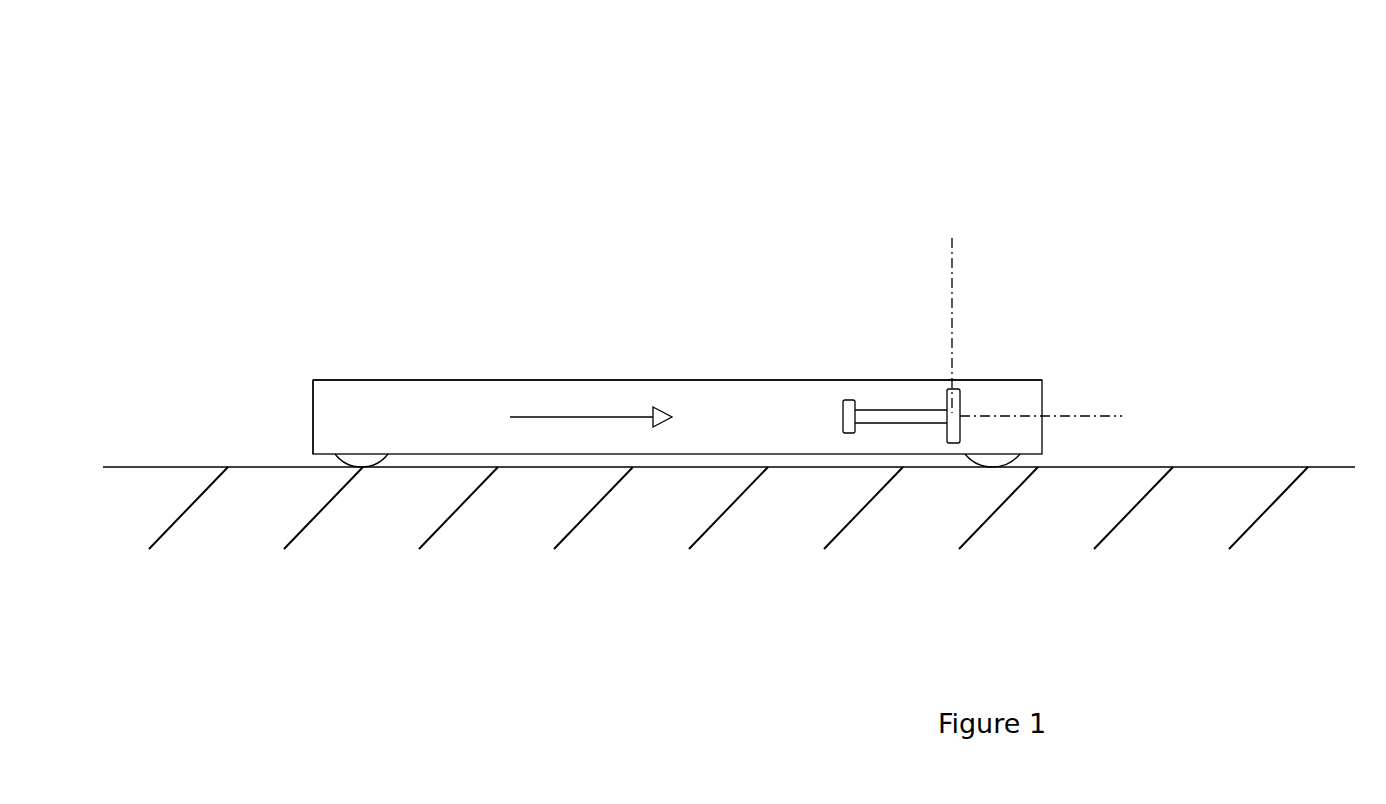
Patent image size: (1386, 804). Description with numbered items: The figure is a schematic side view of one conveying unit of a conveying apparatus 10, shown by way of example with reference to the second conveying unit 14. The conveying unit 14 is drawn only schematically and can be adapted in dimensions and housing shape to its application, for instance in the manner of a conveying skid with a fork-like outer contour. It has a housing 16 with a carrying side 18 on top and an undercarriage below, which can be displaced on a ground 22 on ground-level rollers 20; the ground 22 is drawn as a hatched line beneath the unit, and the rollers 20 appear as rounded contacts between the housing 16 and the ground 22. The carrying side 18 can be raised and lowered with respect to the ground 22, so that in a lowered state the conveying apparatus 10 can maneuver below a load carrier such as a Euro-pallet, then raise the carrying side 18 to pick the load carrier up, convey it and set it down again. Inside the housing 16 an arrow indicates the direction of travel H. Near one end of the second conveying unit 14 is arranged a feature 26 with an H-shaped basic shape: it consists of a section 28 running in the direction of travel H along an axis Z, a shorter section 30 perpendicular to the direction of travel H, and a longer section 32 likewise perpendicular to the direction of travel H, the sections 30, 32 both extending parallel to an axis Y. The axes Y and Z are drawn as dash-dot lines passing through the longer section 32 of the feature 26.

The conveying apparatus 10 is at (560, 340).
The second conveying unit 14 is at (448, 300).
The housing 16 is at (313, 380).
The carrying side 18 is at (374, 370).
The ground-level rollers 20 is at (365, 475).
The ground 22 is at (1197, 465).
The feature 26 is at (867, 431).
The section in the direction of travel 28 is at (903, 424).
The shorter section 30 is at (847, 435).
The longer section 32 is at (952, 445).
The direction of travel H is at (587, 412).
The axis Y is at (950, 302).
The axis Z is at (1120, 415).